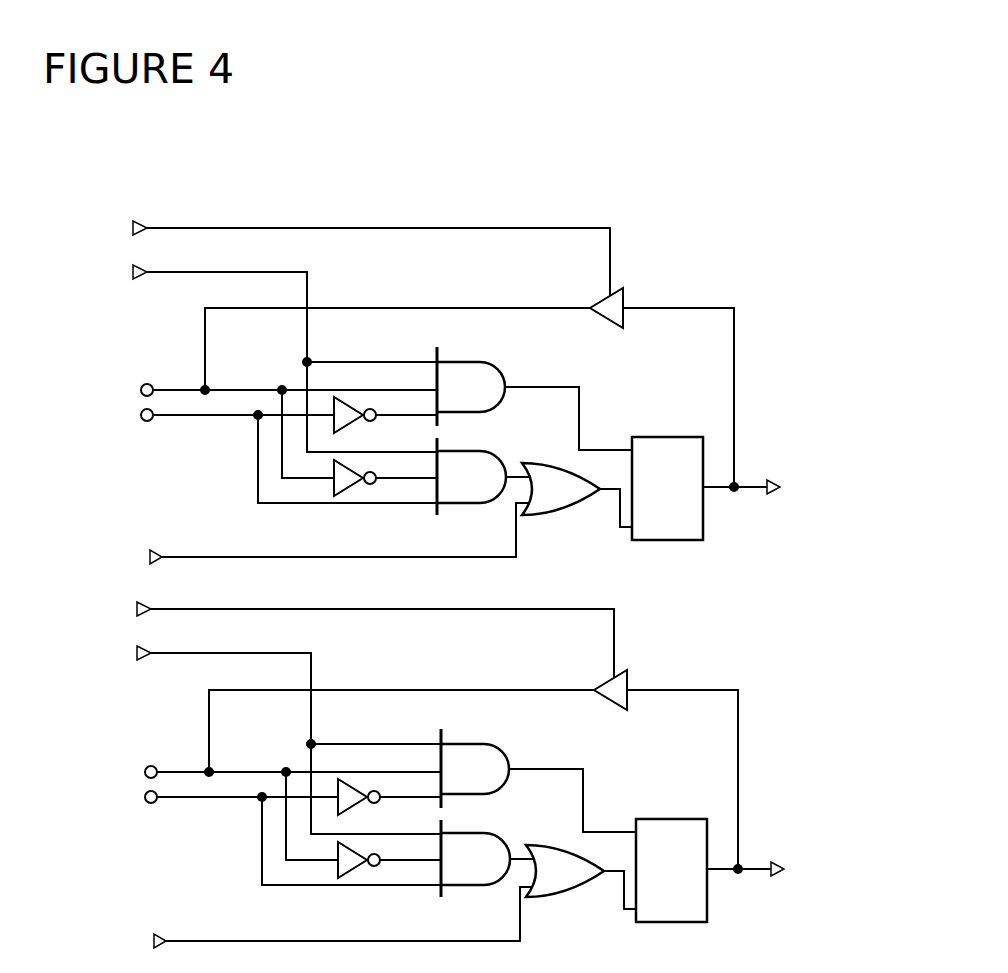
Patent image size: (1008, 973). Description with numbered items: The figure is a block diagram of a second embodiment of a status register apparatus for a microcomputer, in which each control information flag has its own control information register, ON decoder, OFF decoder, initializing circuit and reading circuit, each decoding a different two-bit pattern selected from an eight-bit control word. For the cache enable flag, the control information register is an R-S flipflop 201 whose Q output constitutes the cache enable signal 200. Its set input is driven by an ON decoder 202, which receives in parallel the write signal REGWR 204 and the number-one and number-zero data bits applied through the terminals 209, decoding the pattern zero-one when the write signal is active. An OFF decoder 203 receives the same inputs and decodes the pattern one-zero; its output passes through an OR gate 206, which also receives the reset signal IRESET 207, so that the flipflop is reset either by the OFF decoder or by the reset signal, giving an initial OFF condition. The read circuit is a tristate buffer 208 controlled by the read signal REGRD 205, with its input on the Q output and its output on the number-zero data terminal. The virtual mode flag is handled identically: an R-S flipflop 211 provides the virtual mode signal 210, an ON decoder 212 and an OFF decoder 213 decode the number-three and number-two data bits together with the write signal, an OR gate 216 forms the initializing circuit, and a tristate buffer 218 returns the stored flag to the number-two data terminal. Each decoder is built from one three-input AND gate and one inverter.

The cache enable signal 200 is at (748, 487).
The R-S flipflop 201 is at (643, 437).
The ON decoder 202 is at (500, 362).
The OFF decoder 203 is at (500, 451).
The write signal REGWR 204 is at (197, 272).
The read signal REGRD 205 is at (197, 228).
The OR gate 206 is at (565, 515).
The reset signal IRESET 207 is at (200, 557).
The tristate buffer 208 is at (625, 297).
The terminals 209 is at (35, 368).
The virtual mode signal 210 is at (796, 833).
The R-S flipflop 211 is at (671, 838).
The ON decoder 212 is at (538, 768).
The OFF decoder 213 is at (504, 843).
The OR gate 216 is at (581, 901).
The tristate buffer 218 is at (473, 753).